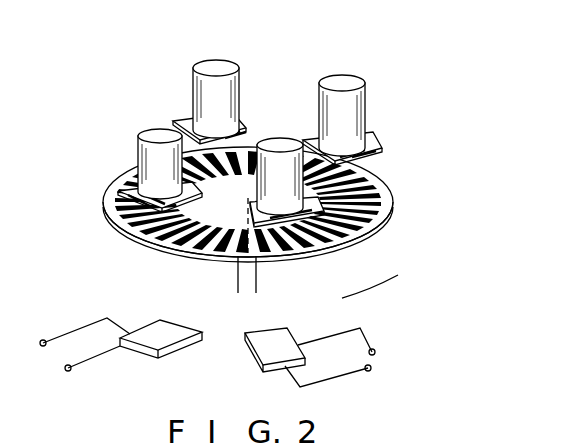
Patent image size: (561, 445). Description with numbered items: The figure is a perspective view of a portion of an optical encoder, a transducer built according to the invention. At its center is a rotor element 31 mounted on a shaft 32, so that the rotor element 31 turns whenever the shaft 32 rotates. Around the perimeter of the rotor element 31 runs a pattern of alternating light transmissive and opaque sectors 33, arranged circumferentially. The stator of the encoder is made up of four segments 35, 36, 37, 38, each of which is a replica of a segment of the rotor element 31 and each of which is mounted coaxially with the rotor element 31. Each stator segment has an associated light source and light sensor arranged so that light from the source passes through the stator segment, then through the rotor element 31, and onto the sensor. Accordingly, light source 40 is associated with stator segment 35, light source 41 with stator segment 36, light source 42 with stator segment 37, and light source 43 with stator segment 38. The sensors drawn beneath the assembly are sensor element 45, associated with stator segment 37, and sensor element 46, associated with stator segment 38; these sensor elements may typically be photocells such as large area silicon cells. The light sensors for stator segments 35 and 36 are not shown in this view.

The rotor element 31 is at (388, 208).
The shaft 32 is at (248, 267).
The alternating light transmissive and opaque sectors 33 is at (393, 186).
The stator segment 35 is at (377, 140).
The stator segment 36 is at (250, 113).
The stator segment 37 is at (103, 193).
The stator segment 38 is at (365, 232).
The light source 40 is at (362, 95).
The light source 41 is at (226, 66).
The light source 42 is at (158, 133).
The light source 43 is at (280, 140).
The sensor element 45 is at (158, 356).
The sensor element 46 is at (257, 352).